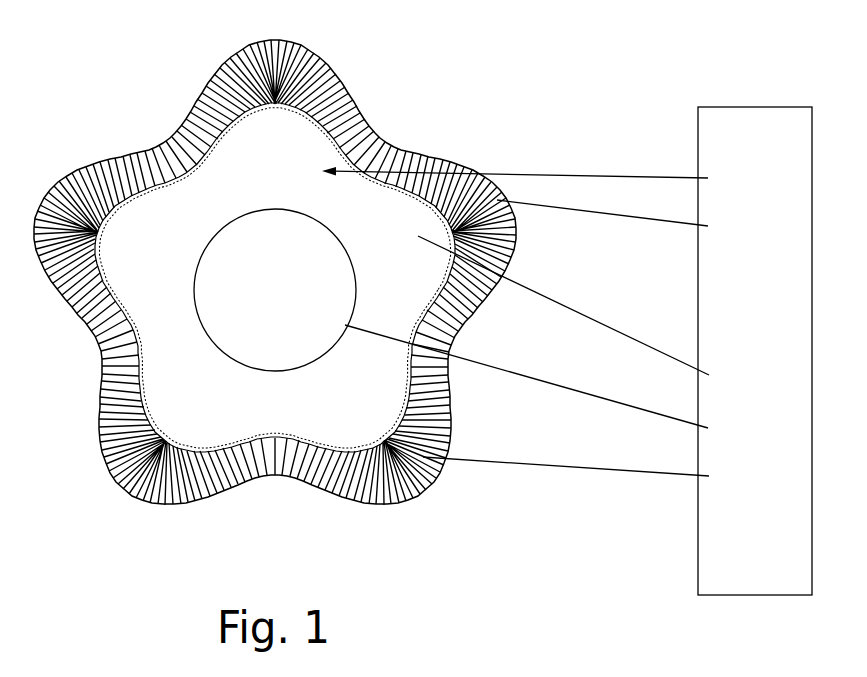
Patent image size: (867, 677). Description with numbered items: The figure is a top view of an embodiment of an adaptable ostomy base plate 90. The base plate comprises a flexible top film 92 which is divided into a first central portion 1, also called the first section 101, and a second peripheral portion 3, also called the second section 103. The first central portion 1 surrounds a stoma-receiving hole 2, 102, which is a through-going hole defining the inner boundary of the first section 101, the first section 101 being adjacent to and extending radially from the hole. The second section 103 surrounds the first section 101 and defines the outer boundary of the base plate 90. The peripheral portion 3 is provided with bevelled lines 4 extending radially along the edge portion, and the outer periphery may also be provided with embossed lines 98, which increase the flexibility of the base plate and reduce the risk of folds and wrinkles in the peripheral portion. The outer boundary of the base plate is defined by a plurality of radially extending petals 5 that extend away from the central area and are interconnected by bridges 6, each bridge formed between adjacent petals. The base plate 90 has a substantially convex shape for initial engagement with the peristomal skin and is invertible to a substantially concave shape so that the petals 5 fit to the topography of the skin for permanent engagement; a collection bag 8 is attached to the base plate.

The first central portion 1 is at (417, 278).
The stoma-receiving hole 2 is at (275, 290).
The second peripheral portion 3 is at (505, 223).
The bevelled lines 4 is at (440, 480).
The petals 5 is at (126, 505).
The bridges 6 is at (273, 484).
The collection bag 8 is at (388, 484).
The adaptable ostomy base plate 90 is at (741, 141).
The flexible top film 92 is at (531, 179).
The embossed lines 98 is at (618, 220).
The first section 101 is at (586, 313).
The stoma-receiving through-going hole 102 is at (550, 383).
The second section 103 is at (589, 473).